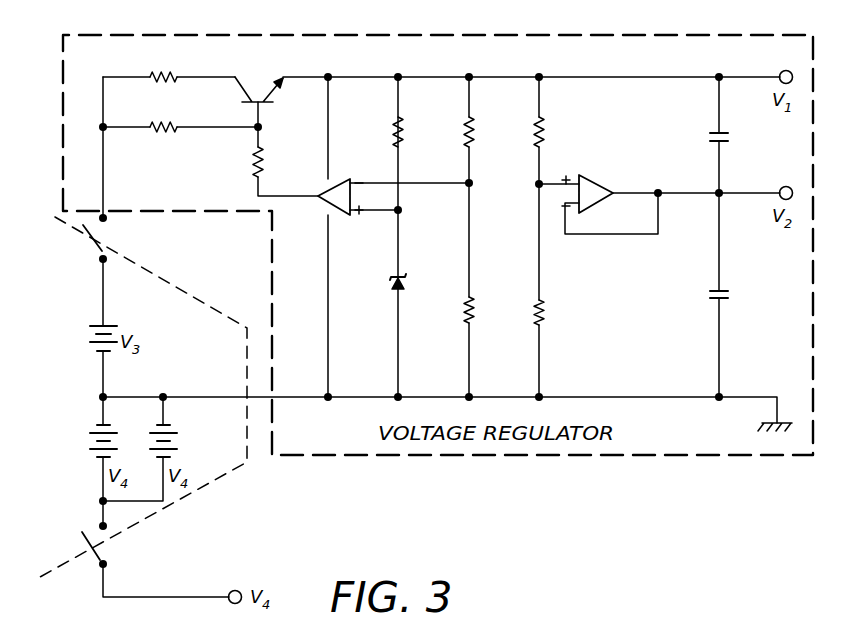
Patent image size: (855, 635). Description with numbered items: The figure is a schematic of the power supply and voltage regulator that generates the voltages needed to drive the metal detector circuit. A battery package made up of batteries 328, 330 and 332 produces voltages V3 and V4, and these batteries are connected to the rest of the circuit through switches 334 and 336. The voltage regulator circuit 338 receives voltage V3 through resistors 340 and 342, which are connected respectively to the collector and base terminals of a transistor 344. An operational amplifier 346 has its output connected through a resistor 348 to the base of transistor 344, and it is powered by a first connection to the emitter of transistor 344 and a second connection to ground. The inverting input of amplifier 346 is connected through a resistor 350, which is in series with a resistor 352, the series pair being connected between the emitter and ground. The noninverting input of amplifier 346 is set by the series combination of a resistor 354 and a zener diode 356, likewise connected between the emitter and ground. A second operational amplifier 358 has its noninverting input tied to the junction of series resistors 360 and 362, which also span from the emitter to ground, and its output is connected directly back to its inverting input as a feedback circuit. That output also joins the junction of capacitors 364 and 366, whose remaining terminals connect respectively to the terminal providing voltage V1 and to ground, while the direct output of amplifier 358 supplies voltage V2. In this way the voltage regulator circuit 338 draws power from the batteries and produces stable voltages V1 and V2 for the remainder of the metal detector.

The battery 328 is at (90, 345).
The battery 330 is at (90, 442).
The battery 332 is at (172, 440).
The switch 334 is at (98, 256).
The switch 336 is at (97, 565).
The voltage regulator circuit 338 is at (513, 455).
The resistor 340 is at (150, 73).
The resistor 342 is at (155, 130).
The transistor 344 is at (260, 84).
The operational amplifier 346 is at (342, 216).
The resistor 348 is at (254, 170).
The resistor 350 is at (473, 124).
The resistor 352 is at (473, 318).
The resistor 354 is at (402, 124).
The zener diode 356 is at (404, 283).
The second operational amplifier 358 is at (596, 182).
The resistor 360 is at (543, 124).
The resistor 362 is at (543, 318).
The capacitor 364 is at (715, 130).
The capacitor 366 is at (713, 303).